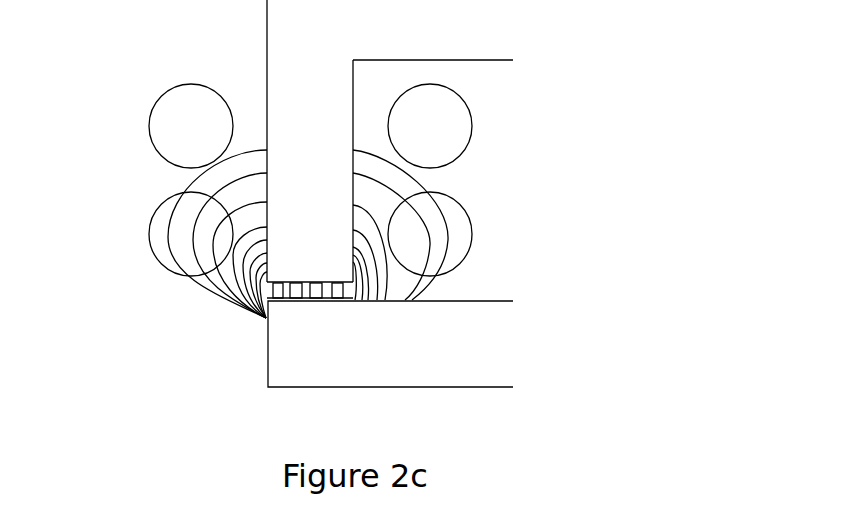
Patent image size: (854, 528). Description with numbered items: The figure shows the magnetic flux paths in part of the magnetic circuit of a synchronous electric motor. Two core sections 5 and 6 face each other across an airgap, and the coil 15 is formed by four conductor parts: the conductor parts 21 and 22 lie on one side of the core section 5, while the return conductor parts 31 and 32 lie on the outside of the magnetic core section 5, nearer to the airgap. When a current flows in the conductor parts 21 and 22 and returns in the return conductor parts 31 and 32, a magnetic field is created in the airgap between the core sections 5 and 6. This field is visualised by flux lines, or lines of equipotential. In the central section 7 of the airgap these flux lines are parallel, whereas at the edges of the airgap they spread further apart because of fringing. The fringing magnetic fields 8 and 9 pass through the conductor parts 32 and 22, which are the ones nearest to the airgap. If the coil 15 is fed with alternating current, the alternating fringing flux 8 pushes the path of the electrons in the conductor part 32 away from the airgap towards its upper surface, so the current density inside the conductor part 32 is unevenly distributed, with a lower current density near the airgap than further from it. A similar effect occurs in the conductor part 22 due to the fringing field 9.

The core section 5 is at (298, 16).
The core section 6 is at (298, 352).
The central section of the airgap 7 is at (340, 287).
The fringing magnetic field 8 is at (193, 302).
The fringing magnetic field 9 is at (428, 292).
The coil 15 is at (126, 72).
The conductor part 21 is at (438, 130).
The conductor part 22 is at (437, 240).
The return conductor part 31 is at (181, 130).
The return conductor part 32 is at (183, 240).